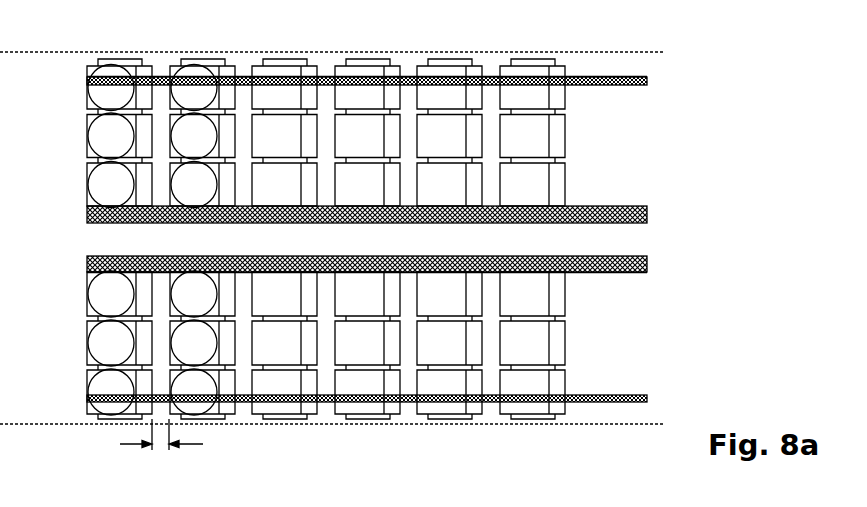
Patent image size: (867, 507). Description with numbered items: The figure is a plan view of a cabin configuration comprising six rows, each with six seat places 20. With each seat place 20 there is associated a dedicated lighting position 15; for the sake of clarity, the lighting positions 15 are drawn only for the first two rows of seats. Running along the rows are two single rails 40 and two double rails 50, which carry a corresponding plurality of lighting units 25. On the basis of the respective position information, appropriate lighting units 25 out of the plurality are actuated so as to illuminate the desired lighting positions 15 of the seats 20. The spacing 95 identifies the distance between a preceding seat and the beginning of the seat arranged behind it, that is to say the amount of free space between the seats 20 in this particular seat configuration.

The lighting position 15 is at (89, 134).
The seat place 20 is at (565, 131).
The lighting unit 25 is at (610, 77).
The single rail 40 is at (647, 80).
The double rail 50 is at (647, 212).
The spacing 95 is at (160, 447).